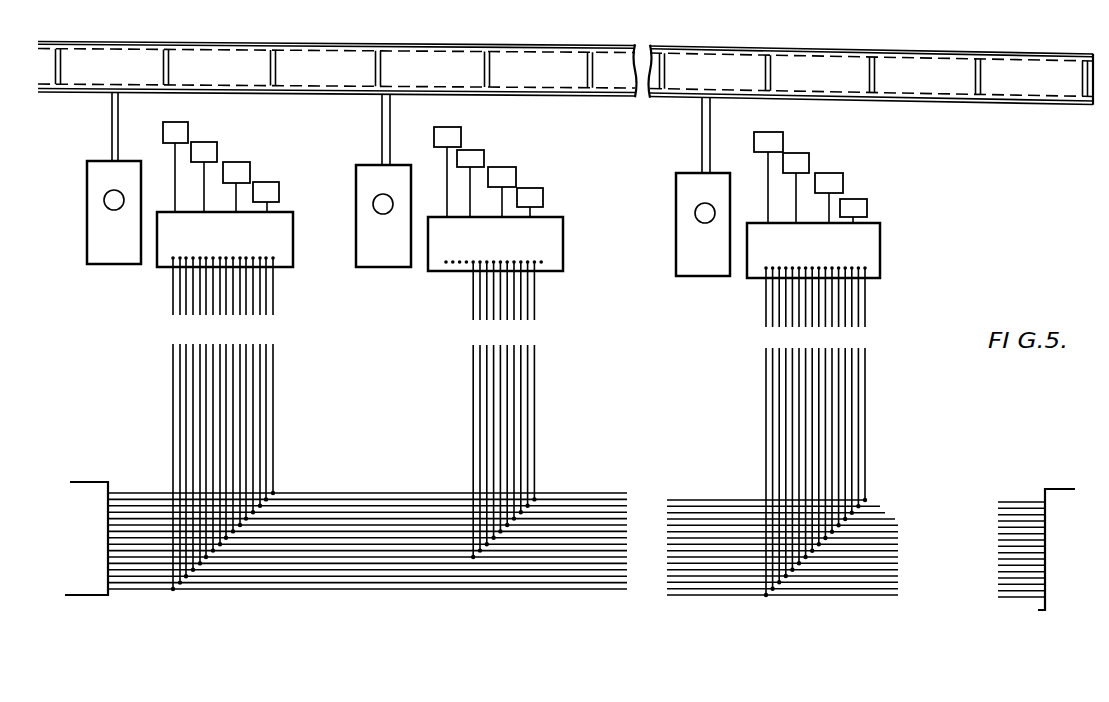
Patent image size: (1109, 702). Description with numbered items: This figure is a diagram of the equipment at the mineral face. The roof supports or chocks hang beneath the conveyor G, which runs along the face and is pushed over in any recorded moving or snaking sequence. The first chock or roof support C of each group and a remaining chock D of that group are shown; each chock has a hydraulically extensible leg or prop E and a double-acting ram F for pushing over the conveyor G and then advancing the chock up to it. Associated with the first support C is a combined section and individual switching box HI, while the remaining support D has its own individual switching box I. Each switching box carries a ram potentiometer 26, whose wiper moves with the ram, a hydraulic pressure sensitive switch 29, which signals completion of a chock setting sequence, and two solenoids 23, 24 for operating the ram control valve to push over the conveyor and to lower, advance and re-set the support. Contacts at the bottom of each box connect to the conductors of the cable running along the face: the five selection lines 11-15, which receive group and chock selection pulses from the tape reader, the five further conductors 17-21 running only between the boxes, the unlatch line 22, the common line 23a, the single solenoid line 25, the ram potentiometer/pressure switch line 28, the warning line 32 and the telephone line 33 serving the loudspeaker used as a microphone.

The double-acting ram F is at (112, 122).
The first chock or roof support C is at (97, 177).
The hydraulically extensible leg or prop E is at (104, 203).
The remaining chock D is at (370, 177).
The conveyor G is at (933, 82).
The section and individual switching box HI is at (270, 244).
The individual switching box I is at (545, 248).
The ram potentiometer 26 is at (185, 130).
The hydraulic pressure sensitive switch 29 is at (214, 148).
The solenoid 23 is at (247, 166).
The solenoid 24 is at (279, 197).
The warning line 32 is at (675, 513).
The telephone line 33 is at (708, 506).
The unlatch line 22 is at (738, 500).
The ram potentiometer/pressure switch line 28 is at (875, 519).
The solenoid line 25 is at (882, 525).
The common line 23a is at (892, 531).
The further conductors 17-21 is at (895, 538).
The selection lines 11-15 is at (895, 572).